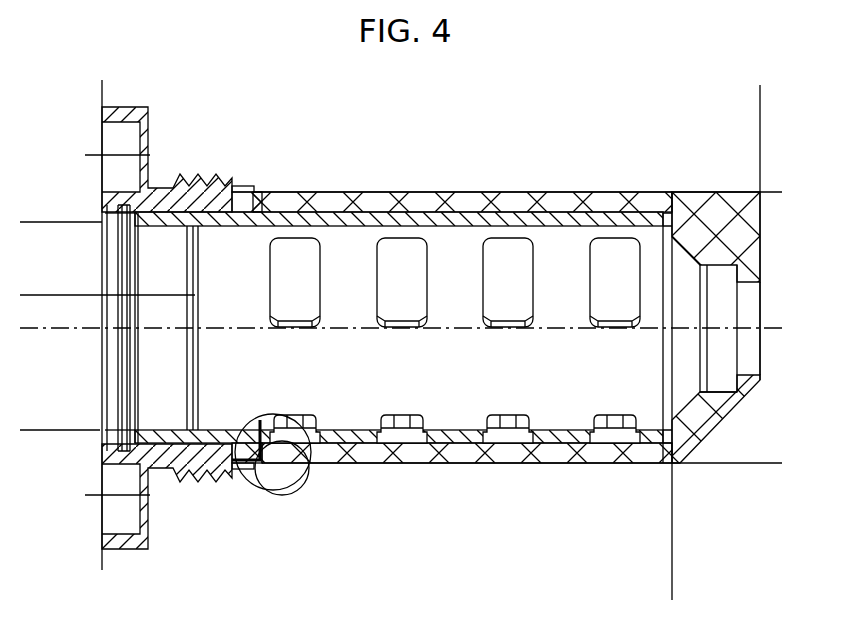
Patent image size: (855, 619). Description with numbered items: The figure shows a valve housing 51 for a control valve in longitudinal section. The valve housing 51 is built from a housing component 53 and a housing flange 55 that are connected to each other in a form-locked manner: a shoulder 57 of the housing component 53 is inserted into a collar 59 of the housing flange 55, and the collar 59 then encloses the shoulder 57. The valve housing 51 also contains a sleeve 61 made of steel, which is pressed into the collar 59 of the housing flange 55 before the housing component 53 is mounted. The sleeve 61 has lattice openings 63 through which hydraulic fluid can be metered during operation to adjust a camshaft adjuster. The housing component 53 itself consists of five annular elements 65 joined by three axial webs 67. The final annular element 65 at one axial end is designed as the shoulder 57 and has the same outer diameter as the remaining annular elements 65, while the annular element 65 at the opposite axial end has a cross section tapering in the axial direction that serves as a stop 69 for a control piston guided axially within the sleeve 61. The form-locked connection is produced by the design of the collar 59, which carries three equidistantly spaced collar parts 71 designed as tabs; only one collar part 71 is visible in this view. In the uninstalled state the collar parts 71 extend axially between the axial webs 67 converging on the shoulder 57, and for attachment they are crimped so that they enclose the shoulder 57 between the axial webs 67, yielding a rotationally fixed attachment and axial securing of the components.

The valve housing 51 is at (500, 120).
The housing component 53 is at (313, 205).
The housing flange 55 is at (163, 262).
The shoulder 57 is at (243, 198).
The collar 59 is at (200, 195).
The sleeve 61 is at (452, 380).
The lattice openings 63 is at (400, 280).
The annular elements 65 is at (570, 212).
The axial webs 67 is at (664, 213).
The stop 69 is at (715, 223).
The collar parts 71 is at (308, 447).